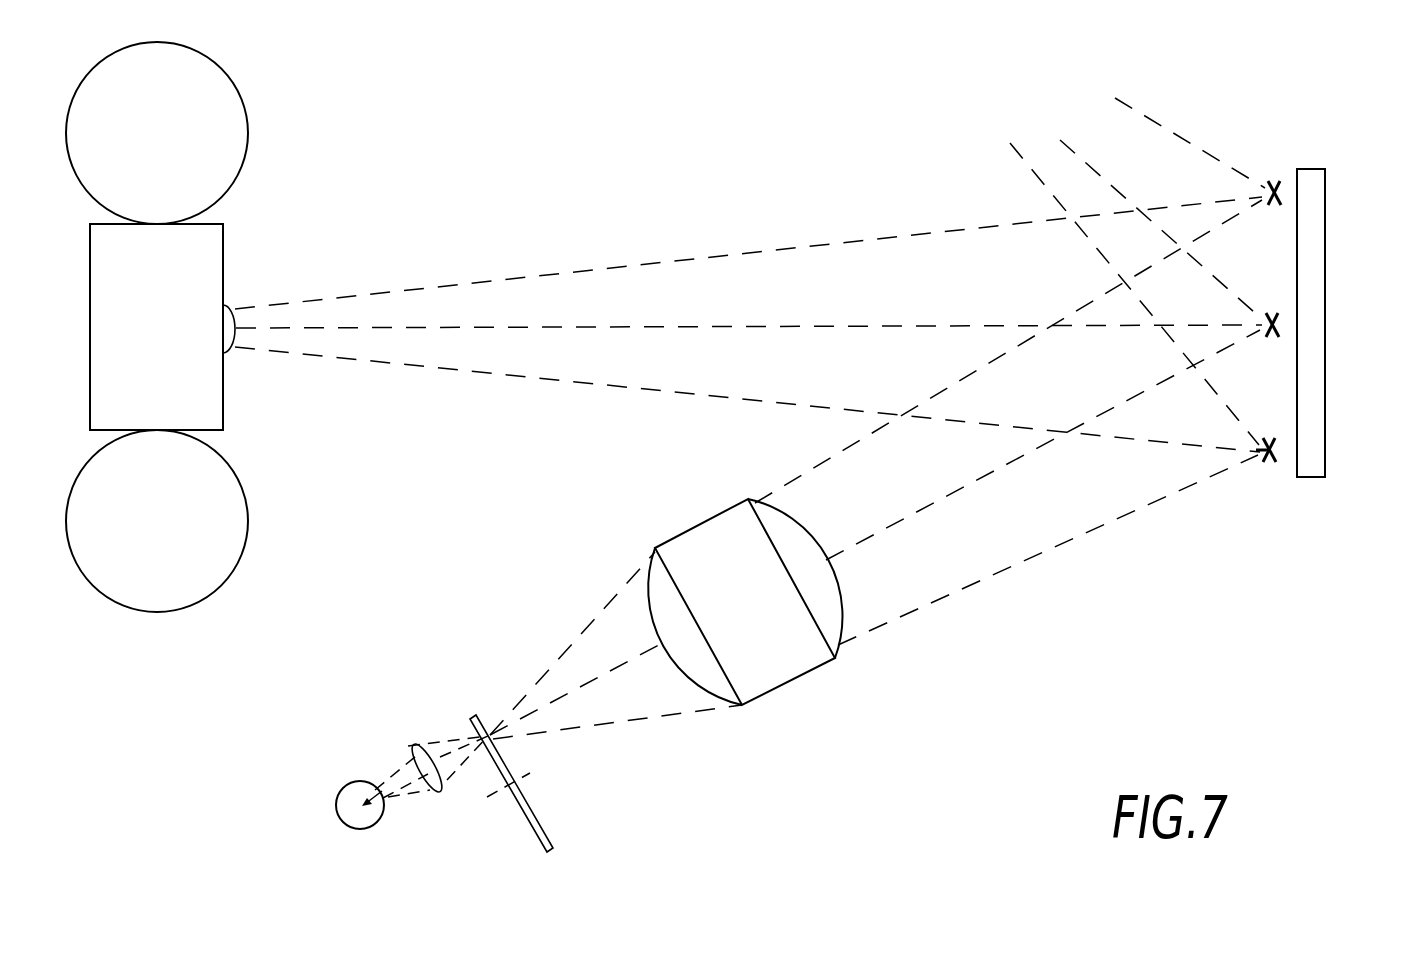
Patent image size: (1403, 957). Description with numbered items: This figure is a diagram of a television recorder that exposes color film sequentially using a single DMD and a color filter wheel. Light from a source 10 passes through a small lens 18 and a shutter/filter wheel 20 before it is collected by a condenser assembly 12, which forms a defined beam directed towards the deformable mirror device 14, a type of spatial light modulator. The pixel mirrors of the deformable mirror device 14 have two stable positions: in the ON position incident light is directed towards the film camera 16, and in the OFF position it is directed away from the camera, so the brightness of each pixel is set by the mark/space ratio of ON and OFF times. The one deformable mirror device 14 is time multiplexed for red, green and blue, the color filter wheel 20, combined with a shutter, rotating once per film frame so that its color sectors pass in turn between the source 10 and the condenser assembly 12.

The source 10 is at (335, 803).
The condenser assembly 12 is at (792, 682).
The deformable mirror device (DMD) 14 is at (1325, 320).
The film camera 16 is at (90, 323).
The lens 18 is at (415, 743).
The shutter/filter wheel 20 is at (551, 853).